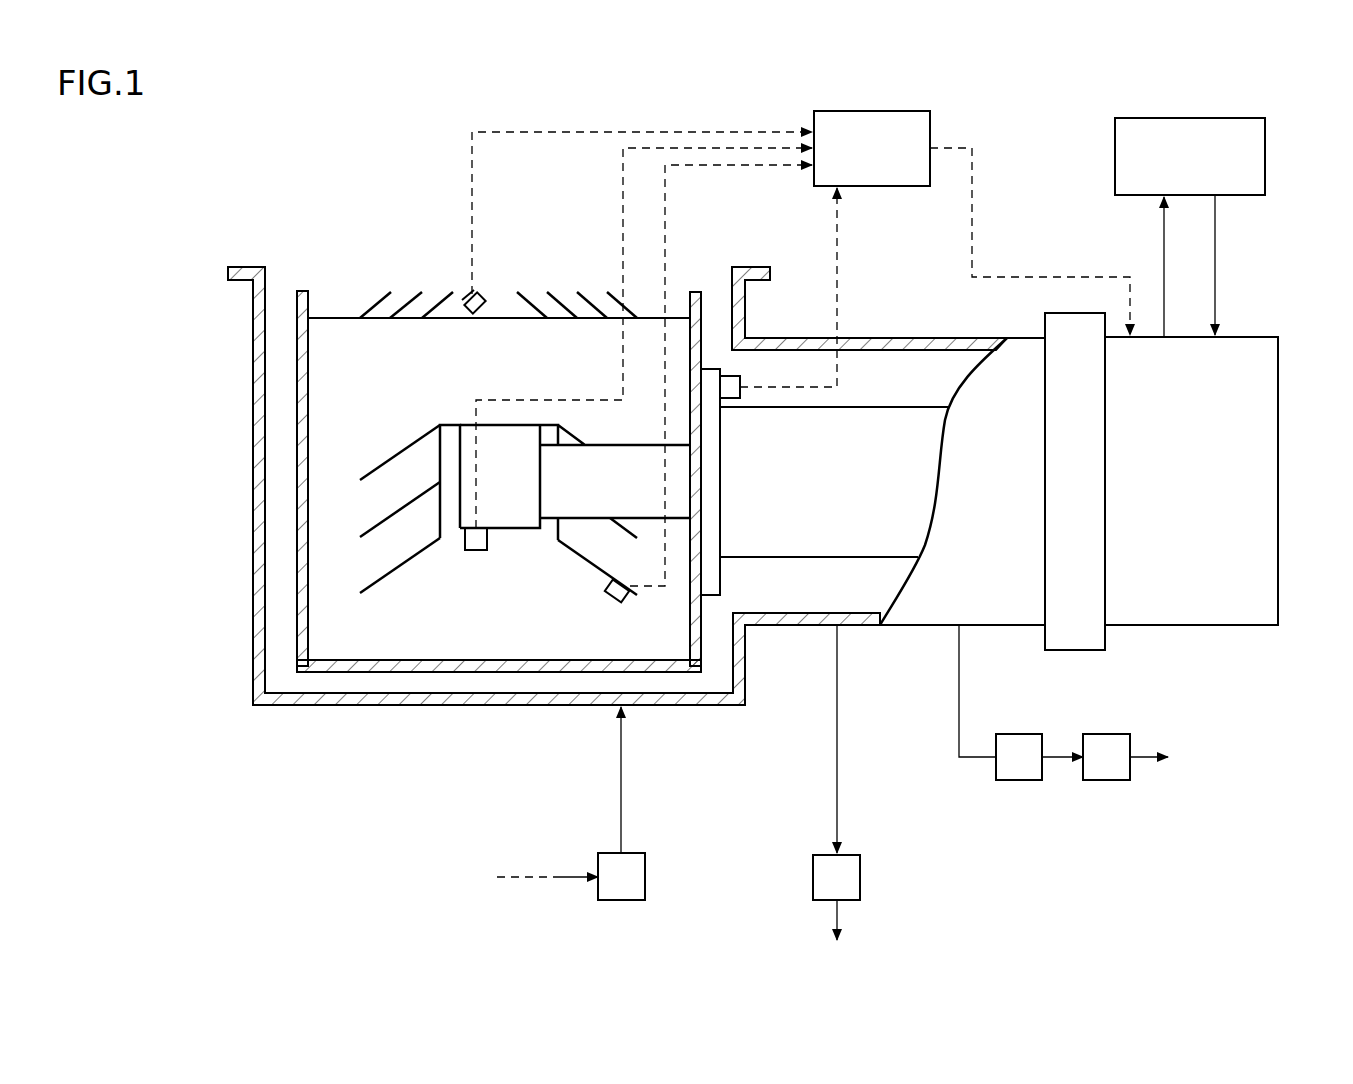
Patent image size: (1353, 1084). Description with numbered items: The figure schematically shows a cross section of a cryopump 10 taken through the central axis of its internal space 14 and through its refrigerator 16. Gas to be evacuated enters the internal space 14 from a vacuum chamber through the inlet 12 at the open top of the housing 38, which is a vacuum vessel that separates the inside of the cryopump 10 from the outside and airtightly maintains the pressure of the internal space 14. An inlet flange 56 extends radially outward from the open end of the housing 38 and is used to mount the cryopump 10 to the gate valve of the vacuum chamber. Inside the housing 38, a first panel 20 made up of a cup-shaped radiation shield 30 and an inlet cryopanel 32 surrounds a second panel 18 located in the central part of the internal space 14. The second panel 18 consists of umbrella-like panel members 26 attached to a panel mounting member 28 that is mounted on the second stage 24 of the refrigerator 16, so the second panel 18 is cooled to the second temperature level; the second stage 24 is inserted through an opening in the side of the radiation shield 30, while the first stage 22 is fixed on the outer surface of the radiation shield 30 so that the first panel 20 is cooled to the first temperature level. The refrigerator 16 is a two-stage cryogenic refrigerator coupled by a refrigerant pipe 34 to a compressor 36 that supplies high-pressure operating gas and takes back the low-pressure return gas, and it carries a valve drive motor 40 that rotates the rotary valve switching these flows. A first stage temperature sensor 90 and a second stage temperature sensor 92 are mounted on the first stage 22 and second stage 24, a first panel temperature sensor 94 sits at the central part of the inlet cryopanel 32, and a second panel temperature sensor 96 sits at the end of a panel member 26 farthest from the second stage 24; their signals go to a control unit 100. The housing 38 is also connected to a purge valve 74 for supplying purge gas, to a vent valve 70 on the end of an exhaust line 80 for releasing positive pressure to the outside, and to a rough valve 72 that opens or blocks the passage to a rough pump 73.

The cryopump 10 is at (225, 806).
The inlet 12 is at (527, 282).
The internal space 14 is at (332, 633).
The refrigerator 16 is at (880, 398).
The second panel 18 is at (397, 440).
The first panel 20 is at (482, 418).
The first stage 22 is at (710, 368).
The second stage 24 is at (505, 529).
The panel member 26 is at (407, 568).
The panel mounting member 28 is at (447, 424).
The radiation shield 30 is at (284, 308).
The inlet cryopanel 32 is at (520, 436).
The refrigerant pipe 34 is at (1215, 266).
The compressor 36 is at (1115, 155).
The housing 38 is at (253, 480).
The valve drive motor 40 is at (1278, 362).
The inlet flange 56 is at (752, 267).
The vent valve 70 is at (860, 865).
The rough valve 72 is at (1020, 734).
The rough pump 73 is at (1108, 734).
The purge valve 74 is at (648, 867).
The exhaust line 80 is at (837, 682).
The first stage temperature sensor 90 is at (740, 375).
The second stage temperature sensor 92 is at (477, 551).
The first panel temperature sensor 94 is at (479, 312).
The second panel temperature sensor 96 is at (614, 599).
The control unit 100 is at (880, 111).